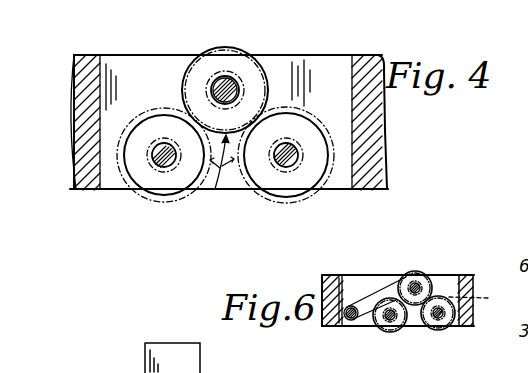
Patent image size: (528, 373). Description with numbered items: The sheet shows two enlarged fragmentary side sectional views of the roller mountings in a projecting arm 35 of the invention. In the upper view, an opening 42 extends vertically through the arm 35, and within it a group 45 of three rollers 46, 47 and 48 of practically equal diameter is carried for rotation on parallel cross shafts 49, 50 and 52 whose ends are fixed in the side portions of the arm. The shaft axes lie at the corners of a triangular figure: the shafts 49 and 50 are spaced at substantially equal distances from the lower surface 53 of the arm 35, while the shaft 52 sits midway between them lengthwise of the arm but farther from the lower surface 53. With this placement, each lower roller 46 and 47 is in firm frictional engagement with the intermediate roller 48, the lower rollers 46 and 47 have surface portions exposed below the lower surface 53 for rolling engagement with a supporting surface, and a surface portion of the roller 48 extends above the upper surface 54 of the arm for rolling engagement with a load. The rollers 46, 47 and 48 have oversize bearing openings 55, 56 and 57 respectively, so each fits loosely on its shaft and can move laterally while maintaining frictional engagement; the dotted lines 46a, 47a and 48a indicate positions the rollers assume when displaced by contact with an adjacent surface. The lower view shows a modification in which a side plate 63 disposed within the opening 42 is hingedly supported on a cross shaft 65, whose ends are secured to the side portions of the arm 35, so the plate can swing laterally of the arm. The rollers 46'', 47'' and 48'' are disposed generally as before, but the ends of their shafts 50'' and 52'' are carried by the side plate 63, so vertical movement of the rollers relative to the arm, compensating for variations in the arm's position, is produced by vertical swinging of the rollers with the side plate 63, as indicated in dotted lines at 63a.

In FIG. 4, the arm 35 is at (384, 150).
In FIG. 6, the arm 35 is at (322, 278).
In FIG. 4, the opening 42 is at (332, 72).
In FIG. 6, the opening 42 is at (452, 279).
In FIG. 4, the group of rollers 45 is at (215, 191).
In FIG. 4, the roller 46 is at (285, 181).
In FIG. 4, the varied position of roller 46 46a is at (306, 196).
In FIG. 4, the roller 47 is at (164, 182).
In FIG. 4, the varied position of roller 47 47a is at (128, 196).
In FIG. 4, the intermediate roller 48 is at (231, 81).
In FIG. 4, the varied position of roller 48 48a is at (226, 48).
In FIG. 4, the cross shaft 49 is at (290, 164).
In FIG. 4, the cross shaft 50 is at (164, 188).
In FIG. 4, the cross shaft 52 is at (188, 67).
In FIG. 4, the lower surface of the arm 53 is at (107, 191).
In FIG. 4, the upper surface of the arm 54 is at (308, 58).
In FIG. 4, the bearing opening 55 is at (300, 127).
In FIG. 4, the bearing opening 56 is at (168, 124).
In FIG. 4, the bearing opening 57 is at (228, 84).
In FIG. 6, the side plate 63 is at (380, 284).
In FIG. 6, the swung position of side plate 63a is at (484, 299).
In FIG. 6, the cross shaft 65 is at (353, 322).
In FIG. 6, the roller 48'' is at (431, 275).
In FIG. 6, the shaft 52'' is at (405, 268).
In FIG. 6, the roller 47'' is at (393, 333).
In FIG. 6, the shaft 50'' is at (375, 334).
In FIG. 6, the roller 46'' is at (454, 327).